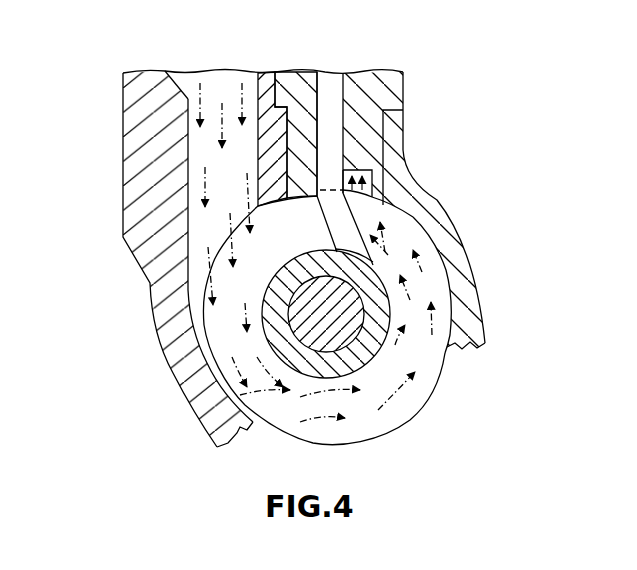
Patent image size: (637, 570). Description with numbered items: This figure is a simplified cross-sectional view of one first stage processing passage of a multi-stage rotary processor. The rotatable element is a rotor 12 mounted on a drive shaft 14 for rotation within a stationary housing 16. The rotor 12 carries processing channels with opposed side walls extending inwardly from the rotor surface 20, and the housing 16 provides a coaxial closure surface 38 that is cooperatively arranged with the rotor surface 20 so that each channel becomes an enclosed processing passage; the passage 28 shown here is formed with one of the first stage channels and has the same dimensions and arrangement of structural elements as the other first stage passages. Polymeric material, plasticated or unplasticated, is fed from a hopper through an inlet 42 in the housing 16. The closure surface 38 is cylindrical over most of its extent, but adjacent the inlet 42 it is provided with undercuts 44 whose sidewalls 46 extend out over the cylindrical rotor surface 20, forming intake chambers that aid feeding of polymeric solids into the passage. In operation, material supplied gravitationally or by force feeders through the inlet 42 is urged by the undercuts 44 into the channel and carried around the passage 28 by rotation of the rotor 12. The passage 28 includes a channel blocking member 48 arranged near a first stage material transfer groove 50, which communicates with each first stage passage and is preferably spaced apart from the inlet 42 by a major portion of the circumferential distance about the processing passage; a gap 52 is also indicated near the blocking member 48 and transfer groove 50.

The rotor 12 is at (273, 337).
The drive shaft 14 is at (347, 333).
The housing 16 is at (205, 427).
The rotor surface 20 is at (447, 350).
The processing passage 28 is at (418, 383).
The coaxial closure surface 38 is at (446, 294).
The inlet 42 is at (123, 155).
The undercuts 44 is at (198, 260).
The sidewalls 46 is at (186, 234).
The channel blocking member 48 is at (330, 92).
The material transfer groove 50 is at (355, 168).
The outlet gap 52 is at (370, 216).